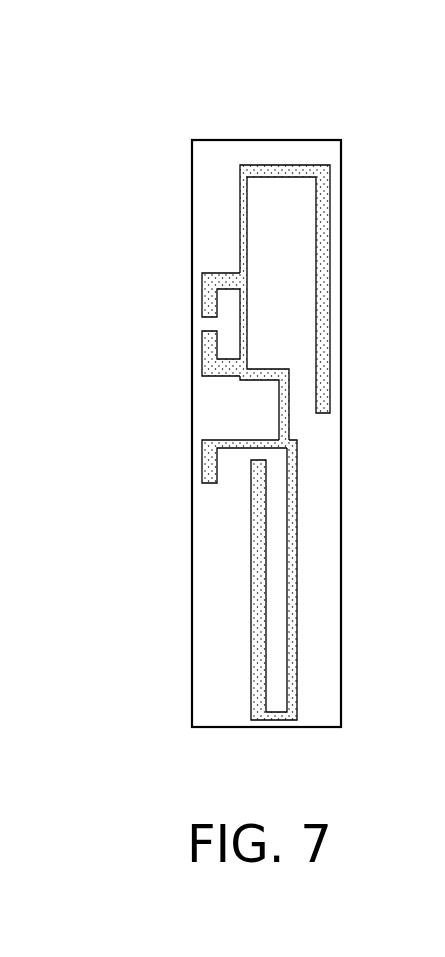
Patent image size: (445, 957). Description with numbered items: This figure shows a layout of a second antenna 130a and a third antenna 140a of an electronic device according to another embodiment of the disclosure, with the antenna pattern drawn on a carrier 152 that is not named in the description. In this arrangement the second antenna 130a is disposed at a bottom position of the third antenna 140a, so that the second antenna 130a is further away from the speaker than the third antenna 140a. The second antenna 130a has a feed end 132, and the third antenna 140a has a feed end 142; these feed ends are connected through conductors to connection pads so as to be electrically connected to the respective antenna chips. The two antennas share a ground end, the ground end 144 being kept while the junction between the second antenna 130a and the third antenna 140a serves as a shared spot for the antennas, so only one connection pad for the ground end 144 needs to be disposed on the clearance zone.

The substrate 152 is at (152, 94).
The third antenna 140a is at (323, 285).
The second antenna 130a is at (290, 602).
The feed end 132 is at (208, 467).
The feed end 142 is at (208, 296).
The ground end 144 is at (208, 352).